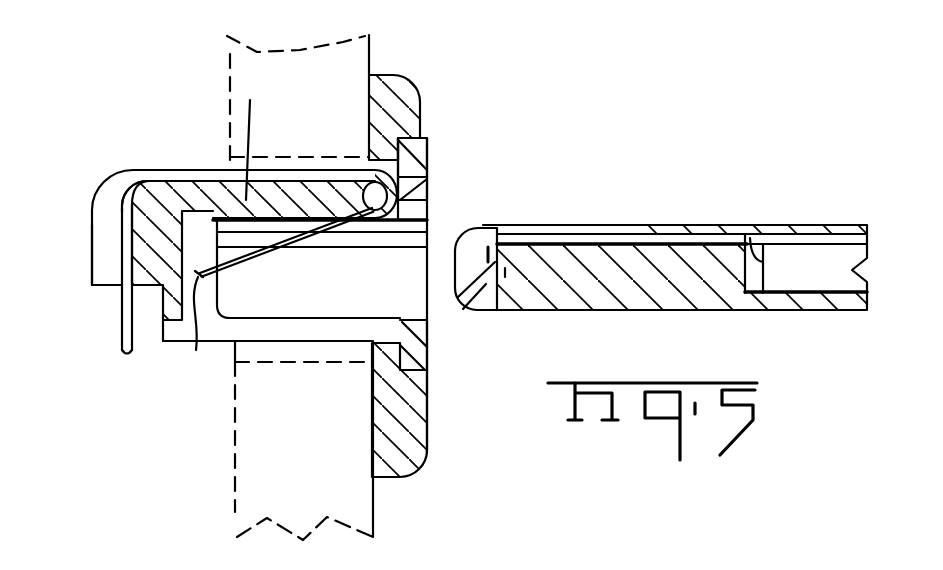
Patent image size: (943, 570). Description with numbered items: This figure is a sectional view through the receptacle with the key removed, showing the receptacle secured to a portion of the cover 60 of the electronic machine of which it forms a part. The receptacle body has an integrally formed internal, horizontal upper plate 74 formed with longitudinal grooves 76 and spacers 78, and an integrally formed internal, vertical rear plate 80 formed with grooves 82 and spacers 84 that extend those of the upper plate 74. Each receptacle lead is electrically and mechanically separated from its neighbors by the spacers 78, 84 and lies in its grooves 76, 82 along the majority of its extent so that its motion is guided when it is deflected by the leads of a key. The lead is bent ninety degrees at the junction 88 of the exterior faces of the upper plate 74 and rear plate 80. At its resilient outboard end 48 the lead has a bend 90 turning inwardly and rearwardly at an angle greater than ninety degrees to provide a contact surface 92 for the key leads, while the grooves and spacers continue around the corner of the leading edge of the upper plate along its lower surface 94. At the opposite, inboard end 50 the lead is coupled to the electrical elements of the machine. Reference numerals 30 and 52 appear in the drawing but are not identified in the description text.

The bearing cartridge 30 is at (453, 262).
The outboard ends 48 is at (191, 328).
The inboard ends 50 is at (128, 357).
The flange 52 is at (410, 91).
The cover 60 is at (370, 50).
The upper plate 74 is at (256, 133).
The longitudinal grooves 76 is at (165, 170).
The spacers 78 is at (192, 170).
The rear plate 80 is at (147, 212).
The grooves 82 is at (107, 225).
The spacers 84 is at (92, 257).
The junction 88 is at (135, 175).
The bend 90 is at (427, 176).
The contact surfaces 92 is at (238, 263).
The lower surface 94 is at (302, 212).